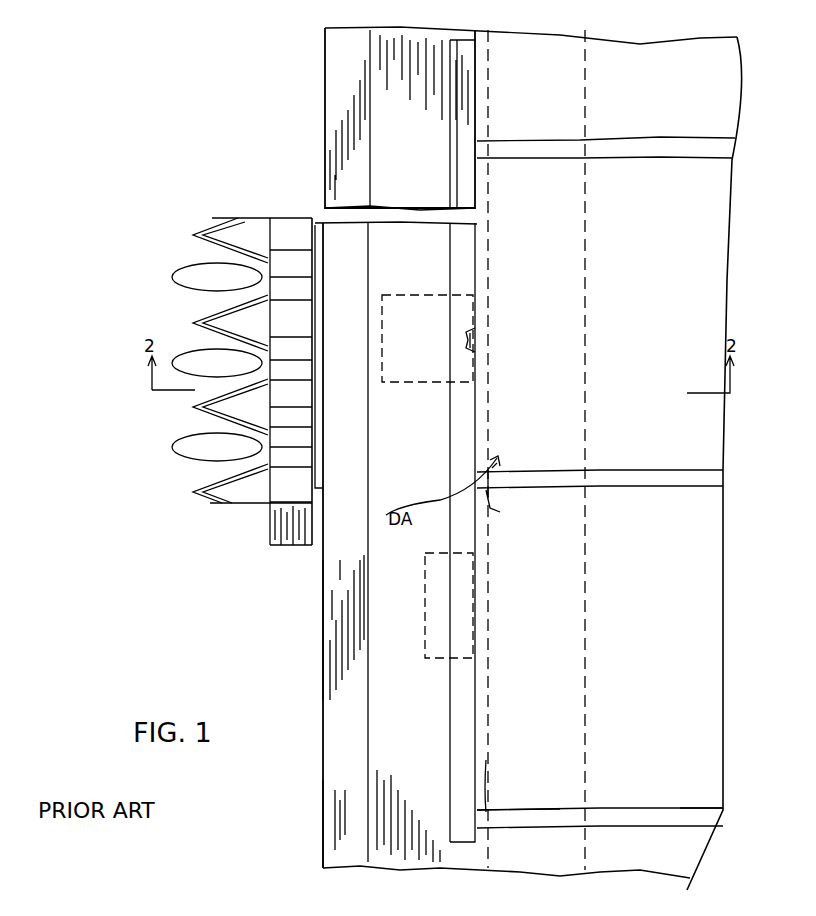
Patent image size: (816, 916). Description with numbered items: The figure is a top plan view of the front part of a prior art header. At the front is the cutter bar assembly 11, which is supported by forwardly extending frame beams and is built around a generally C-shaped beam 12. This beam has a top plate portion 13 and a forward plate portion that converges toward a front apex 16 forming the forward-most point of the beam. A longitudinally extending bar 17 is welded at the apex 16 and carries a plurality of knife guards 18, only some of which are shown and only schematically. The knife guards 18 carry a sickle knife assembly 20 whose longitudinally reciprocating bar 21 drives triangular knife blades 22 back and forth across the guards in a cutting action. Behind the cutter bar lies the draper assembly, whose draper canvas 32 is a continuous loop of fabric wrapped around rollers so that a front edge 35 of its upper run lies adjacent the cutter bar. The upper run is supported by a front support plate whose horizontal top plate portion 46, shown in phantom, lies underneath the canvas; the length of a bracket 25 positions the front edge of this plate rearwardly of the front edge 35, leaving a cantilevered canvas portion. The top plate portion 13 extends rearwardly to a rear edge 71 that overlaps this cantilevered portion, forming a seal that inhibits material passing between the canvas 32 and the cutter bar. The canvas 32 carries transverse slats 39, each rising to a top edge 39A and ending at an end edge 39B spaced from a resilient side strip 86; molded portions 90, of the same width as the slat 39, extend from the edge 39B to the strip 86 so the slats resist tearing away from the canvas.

The cutter bar assembly 11 is at (380, 804).
The C-shaped beam 12 is at (397, 867).
The top plate portion 13 is at (418, 868).
The front apex 16 is at (360, 868).
The longitudinally extending bar 17 is at (335, 690).
The knife guards 18 is at (212, 280).
The sickle knife assembly 20 is at (231, 397).
The longitudinally reciprocating bar 21 is at (266, 533).
The triangular knife blades 22 is at (220, 405).
The bracket 25 is at (429, 288).
The draper canvas 32 is at (450, 136).
The front edge of the upper run 35 is at (450, 182).
The transverse slats 39 is at (577, 482).
The top edge of slat 39A is at (700, 765).
The end edge of slat 39B is at (522, 776).
The horizontal top plate portion 46 is at (565, 602).
The rear edge 71 is at (480, 398).
The strip 86 is at (470, 684).
The portions 90 is at (490, 500).